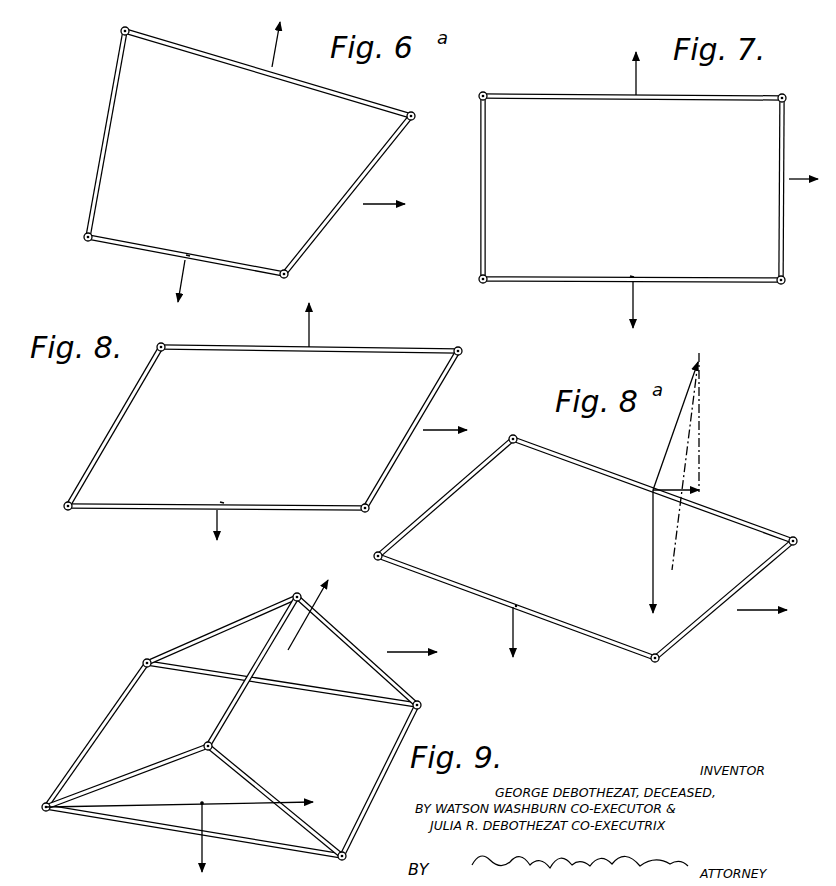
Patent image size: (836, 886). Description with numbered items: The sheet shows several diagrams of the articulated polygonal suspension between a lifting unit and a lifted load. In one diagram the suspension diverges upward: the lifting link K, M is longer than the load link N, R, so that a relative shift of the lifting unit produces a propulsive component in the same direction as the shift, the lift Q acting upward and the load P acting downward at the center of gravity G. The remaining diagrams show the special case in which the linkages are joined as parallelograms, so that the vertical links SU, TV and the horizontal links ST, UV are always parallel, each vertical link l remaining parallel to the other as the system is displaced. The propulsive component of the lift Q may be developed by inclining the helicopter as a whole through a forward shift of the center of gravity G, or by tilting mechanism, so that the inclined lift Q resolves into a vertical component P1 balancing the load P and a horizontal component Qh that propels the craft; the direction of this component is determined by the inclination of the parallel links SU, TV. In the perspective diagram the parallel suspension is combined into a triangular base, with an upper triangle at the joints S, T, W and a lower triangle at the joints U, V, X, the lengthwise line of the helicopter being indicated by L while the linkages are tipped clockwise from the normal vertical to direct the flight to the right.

In FIG. 6A, the lifting link end K is at (120, 30).
In FIG. 6A, the lifting link end M is at (416, 120).
In FIG. 6A, the load link end N is at (84, 240).
In FIG. 6A, the load link end R is at (290, 276).
In FIG. 7, the upper joint S is at (481, 92).
In FIG. 8, the upper joint S is at (160, 342).
In FIG. 8A, the upper joint S is at (510, 437).
In FIG. 9, the upper joint S is at (143, 663).
In FIG. 7, the upper joint T is at (786, 94).
In FIG. 8, the upper joint T is at (463, 351).
In FIG. 8A, the upper joint T is at (797, 548).
In FIG. 9, the upper joint T is at (422, 705).
In FIG. 7, the lower joint U is at (480, 280).
In FIG. 8, the lower joint U is at (65, 507).
In FIG. 8A, the lower joint U is at (372, 556).
In FIG. 9, the lower joint U is at (42, 806).
In FIG. 7, the lower joint V is at (787, 281).
In FIG. 8, the lower joint V is at (370, 509).
In FIG. 8A, the lower joint V is at (658, 664).
In FIG. 9, the lower joint V is at (347, 857).
In FIG. 9, the upper triangle corner W is at (303, 585).
In FIG. 9, the lower triangle corner X is at (213, 744).
In FIG. 7, the vertical link l is at (785, 140).
In FIG. 8, the vertical link l is at (411, 429).
In FIG. 6A, the center of gravity G is at (190, 253).
In FIG. 7, the center of gravity G is at (632, 275).
In FIG. 8, the center of gravity G is at (222, 501).
In FIG. 8A, the center of gravity G is at (522, 592).
In FIG. 9, the center of gravity G is at (193, 806).
In FIG. 6A, the lift Q is at (286, 42).
In FIG. 7, the lift Q is at (627, 70).
In FIG. 8, the lift Q is at (318, 325).
In FIG. 8A, the lift Q is at (682, 426).
In FIG. 9, the lift Q is at (314, 615).
In FIG. 8A, the horizontal component of lift Qh is at (676, 480).
In FIG. 6A, the load P is at (189, 283).
In FIG. 7, the load P is at (643, 307).
In FIG. 8, the load P is at (225, 533).
In FIG. 8A, the load P is at (522, 635).
In FIG. 9, the load P is at (210, 842).
In FIG. 8A, the vertical component of lift P1 is at (637, 553).
In FIG. 9, the lengthwise line of the helicopter L is at (296, 800).